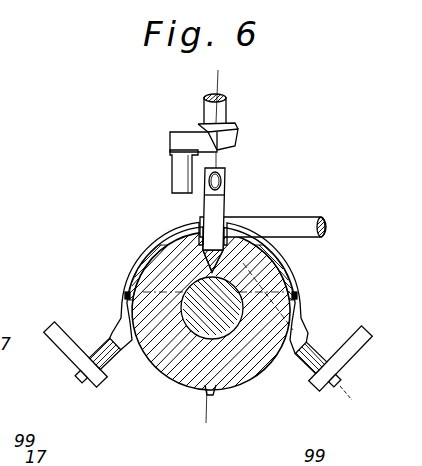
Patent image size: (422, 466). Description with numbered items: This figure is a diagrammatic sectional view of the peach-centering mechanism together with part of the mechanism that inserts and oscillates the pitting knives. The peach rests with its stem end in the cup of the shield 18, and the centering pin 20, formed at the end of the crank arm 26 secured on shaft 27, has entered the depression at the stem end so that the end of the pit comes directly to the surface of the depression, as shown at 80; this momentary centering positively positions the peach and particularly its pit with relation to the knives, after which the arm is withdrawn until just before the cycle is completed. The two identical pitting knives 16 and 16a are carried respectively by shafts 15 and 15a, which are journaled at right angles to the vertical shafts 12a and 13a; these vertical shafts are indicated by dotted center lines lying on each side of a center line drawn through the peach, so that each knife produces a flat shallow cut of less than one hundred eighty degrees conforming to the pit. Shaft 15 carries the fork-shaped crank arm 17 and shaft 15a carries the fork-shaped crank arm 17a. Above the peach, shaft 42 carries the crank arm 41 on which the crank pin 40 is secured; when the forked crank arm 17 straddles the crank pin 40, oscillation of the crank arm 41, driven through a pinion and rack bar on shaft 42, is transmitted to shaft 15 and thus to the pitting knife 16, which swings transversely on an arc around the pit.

The shaft 12a is at (290, 292).
The shaft 13a is at (118, 290).
The shaft 15 is at (342, 380).
The shaft 15a is at (78, 380).
The pitting knife 16 is at (303, 264).
The pitting knife 16a is at (166, 236).
The fork-shaped crank arm 17 is at (368, 339).
The fork-shaped crank arm 17a is at (62, 336).
The shield 18 is at (300, 305).
The centering pin 20 is at (221, 180).
The crank arm 26 is at (226, 196).
The shaft 27 is at (295, 223).
The crank pin 40 is at (179, 180).
The crank arm 41 is at (171, 141).
The shaft 42 is at (228, 102).
The end of the pit at the stem depression 80 is at (210, 270).